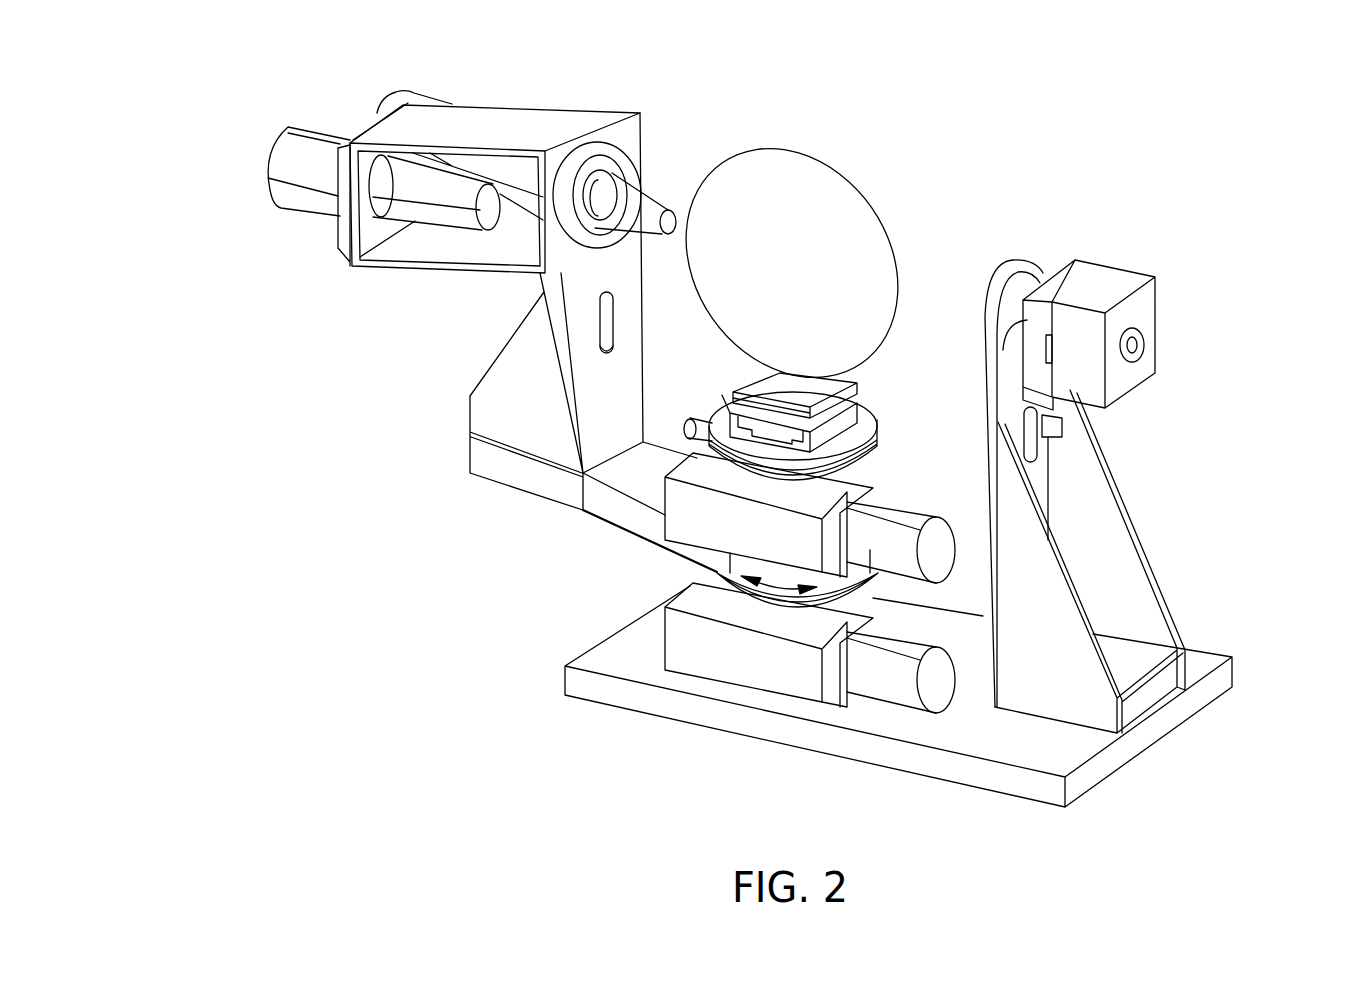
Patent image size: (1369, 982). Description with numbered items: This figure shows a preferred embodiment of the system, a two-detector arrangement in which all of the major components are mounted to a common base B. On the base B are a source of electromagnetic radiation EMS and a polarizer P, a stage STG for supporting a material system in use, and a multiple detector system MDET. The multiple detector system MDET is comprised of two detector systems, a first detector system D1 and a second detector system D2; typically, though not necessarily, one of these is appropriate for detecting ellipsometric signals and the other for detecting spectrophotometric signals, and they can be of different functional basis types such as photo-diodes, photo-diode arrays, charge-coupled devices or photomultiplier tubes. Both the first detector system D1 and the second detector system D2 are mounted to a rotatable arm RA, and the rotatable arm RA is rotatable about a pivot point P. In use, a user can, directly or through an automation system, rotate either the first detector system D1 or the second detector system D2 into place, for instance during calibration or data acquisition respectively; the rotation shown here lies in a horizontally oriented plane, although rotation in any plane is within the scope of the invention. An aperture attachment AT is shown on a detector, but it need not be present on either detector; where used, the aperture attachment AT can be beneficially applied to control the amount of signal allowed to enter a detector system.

The common base B is at (710, 735).
The rotatable arm RA is at (542, 520).
The multiple detector system MDET is at (448, 290).
The first detector system D1 is at (266, 162).
The second detector system D2 is at (378, 83).
The aperture attachment AT is at (658, 192).
The stage STG is at (870, 172).
The polarizer / pivot point P is at (1053, 248).
The source of electromagnetic radiation EMS is at (1157, 258).